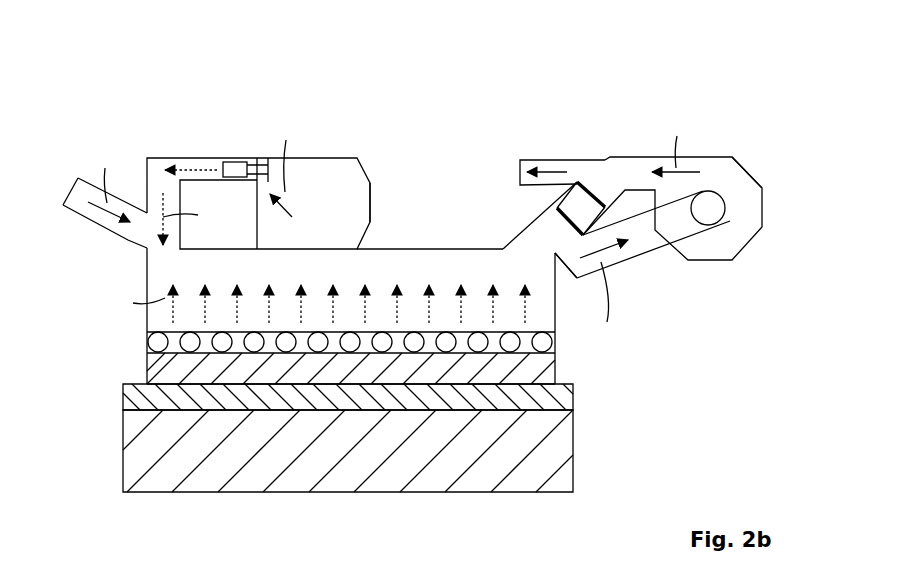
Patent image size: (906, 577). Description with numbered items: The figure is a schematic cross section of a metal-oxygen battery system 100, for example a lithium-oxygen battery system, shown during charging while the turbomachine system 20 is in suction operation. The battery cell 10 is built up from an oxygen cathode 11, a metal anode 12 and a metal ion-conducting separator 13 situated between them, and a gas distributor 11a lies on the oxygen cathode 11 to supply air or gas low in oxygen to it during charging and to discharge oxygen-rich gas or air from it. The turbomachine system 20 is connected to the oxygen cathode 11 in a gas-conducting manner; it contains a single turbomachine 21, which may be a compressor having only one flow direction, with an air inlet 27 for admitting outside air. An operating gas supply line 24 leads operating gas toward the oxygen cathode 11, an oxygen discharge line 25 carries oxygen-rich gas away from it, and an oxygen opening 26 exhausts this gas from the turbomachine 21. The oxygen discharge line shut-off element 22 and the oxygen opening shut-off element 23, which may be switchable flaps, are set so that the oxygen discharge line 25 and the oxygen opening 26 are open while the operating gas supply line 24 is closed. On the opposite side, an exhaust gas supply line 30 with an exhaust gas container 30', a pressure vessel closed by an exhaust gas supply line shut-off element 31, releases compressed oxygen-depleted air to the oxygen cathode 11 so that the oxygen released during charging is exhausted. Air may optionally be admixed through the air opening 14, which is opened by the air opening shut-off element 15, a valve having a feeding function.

The metal-oxygen battery system 100 is at (387, 86).
The battery cell 10 is at (680, 347).
The oxygen cathode 11 is at (152, 367).
The gas distributor 11a is at (148, 341).
The metal anode 12 is at (132, 446).
The metal ion-conducting separator 13 is at (132, 396).
The air opening 14 is at (132, 239).
The air opening shut-off element 15 is at (146, 273).
The turbomachine system 20 is at (720, 144).
The turbomachine 21 is at (712, 252).
The oxygen discharge line shut-off element 22 is at (567, 228).
The oxygen opening shut-off element 23 is at (597, 202).
The operating gas supply line 24 is at (540, 222).
The oxygen discharge line 25 is at (637, 250).
The oxygen opening 26 is at (587, 177).
The air inlet 27 is at (747, 167).
The exhaust gas supply line 30 is at (325, 150).
The exhaust gas container 30' is at (403, 202).
The exhaust gas supply line shut-off element 31 is at (237, 160).